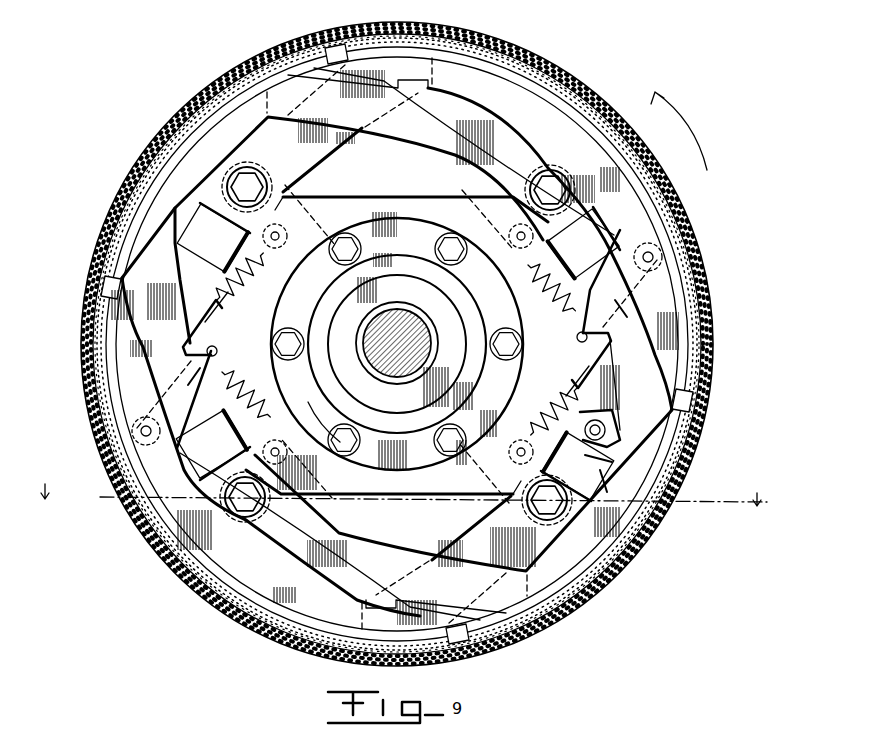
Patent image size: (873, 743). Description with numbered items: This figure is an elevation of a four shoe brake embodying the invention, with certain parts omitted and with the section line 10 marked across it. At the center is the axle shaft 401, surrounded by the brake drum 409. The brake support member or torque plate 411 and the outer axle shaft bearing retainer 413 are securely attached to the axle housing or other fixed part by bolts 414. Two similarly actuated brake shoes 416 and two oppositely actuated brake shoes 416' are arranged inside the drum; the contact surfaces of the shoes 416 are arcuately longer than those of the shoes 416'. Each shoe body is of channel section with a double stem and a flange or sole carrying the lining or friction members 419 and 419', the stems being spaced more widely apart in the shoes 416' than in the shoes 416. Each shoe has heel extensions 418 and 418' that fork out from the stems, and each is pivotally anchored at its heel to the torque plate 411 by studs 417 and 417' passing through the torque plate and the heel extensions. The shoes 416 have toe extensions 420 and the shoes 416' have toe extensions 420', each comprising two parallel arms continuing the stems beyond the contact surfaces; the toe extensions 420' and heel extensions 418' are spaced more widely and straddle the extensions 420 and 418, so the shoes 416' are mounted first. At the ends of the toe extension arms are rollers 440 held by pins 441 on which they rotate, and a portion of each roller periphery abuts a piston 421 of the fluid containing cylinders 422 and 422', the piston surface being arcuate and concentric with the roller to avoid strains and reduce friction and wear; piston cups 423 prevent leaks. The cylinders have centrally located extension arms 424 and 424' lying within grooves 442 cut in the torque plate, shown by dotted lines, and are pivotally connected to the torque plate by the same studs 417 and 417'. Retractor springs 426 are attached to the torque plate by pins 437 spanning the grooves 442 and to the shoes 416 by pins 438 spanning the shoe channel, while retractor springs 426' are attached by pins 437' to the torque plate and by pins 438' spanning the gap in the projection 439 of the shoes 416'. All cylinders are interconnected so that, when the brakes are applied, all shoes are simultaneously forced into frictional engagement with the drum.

The axle shaft 401 is at (403, 320).
The brake drum 409 is at (692, 240).
The torque plate 411 is at (435, 205).
The outer axle shaft bearing retainer 413 is at (407, 256).
The bolts 414 is at (291, 352).
The brake shoes 416 is at (397, 344).
The brake shoes 416' is at (401, 344).
The studs 417 is at (397, 342).
The studs 417' is at (397, 347).
The heel extensions 418 is at (397, 344).
The heel extensions 418' is at (397, 352).
The lining 419 is at (402, 344).
The friction members 419' is at (378, 344).
The toe extensions 420 is at (398, 342).
The toe extensions 420' is at (404, 339).
The pistons 421 is at (612, 460).
The fluid containing cylinders 422 is at (437, 365).
The fluid containing cylinders 422' is at (402, 331).
The piston cups 423 is at (607, 470).
The extension arms 424 is at (411, 352).
The extension arms 424' is at (389, 341).
The retractor springs 426 is at (397, 344).
The retractor springs 426' is at (246, 376).
The pins 437 is at (398, 343).
The pins 437' is at (398, 345).
The pins 438 is at (402, 343).
The pins 438' is at (404, 344).
The projection 439 is at (200, 368).
The rollers 440 is at (617, 448).
The pins 441 is at (605, 430).
The grooves 442 is at (322, 225).
The section line 10 is at (403, 484).